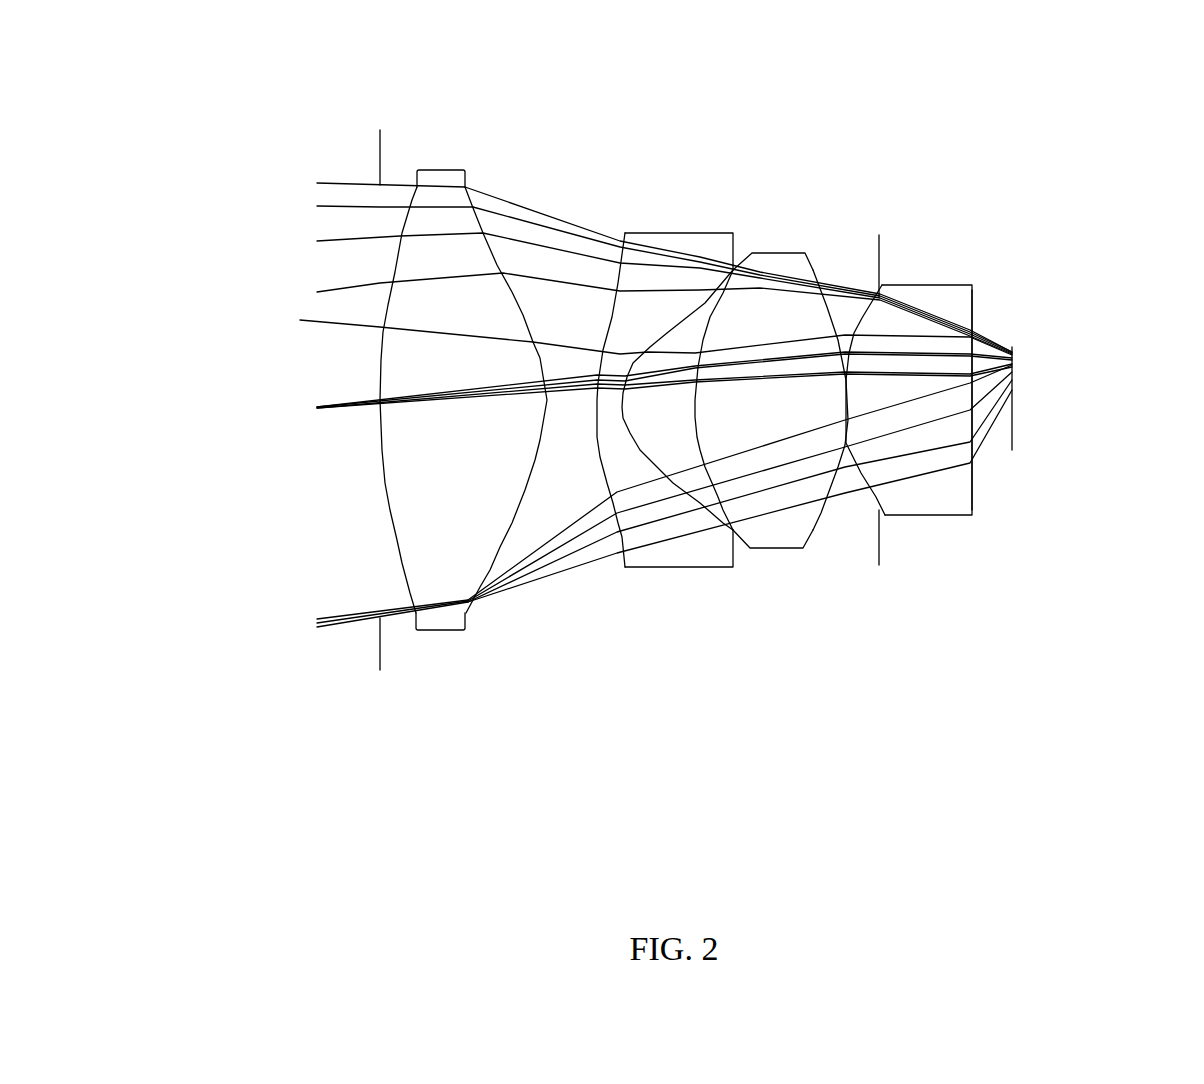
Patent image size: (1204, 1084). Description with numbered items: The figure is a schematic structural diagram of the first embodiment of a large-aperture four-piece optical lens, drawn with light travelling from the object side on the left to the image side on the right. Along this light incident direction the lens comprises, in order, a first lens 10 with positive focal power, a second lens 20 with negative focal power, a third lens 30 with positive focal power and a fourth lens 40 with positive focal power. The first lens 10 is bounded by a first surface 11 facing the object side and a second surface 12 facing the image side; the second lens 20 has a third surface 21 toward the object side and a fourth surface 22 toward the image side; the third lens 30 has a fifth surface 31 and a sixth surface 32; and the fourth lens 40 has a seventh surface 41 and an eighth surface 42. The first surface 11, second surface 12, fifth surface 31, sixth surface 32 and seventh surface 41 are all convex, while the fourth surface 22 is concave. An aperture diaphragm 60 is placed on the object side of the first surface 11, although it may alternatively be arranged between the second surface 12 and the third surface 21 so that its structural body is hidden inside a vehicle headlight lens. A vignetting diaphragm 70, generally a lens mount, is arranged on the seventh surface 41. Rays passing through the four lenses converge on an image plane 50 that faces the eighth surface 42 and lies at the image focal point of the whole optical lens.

The first lens 10 is at (348, 492).
The first surface 11 is at (397, 562).
The second surface 12 is at (512, 497).
The second lens 20 is at (441, 523).
The third surface 21 is at (597, 443).
The fourth surface 22 is at (640, 353).
The third lens 30 is at (748, 428).
The fifth surface 31 is at (703, 302).
The sixth surface 32 is at (815, 530).
The fourth lens 40 is at (963, 315).
The seventh surface 41 is at (863, 320).
The eighth surface 42 is at (974, 455).
The image plane 50 is at (1013, 422).
The aperture diaphragm 60 is at (380, 643).
The vignetting diaphragm 70 is at (883, 535).